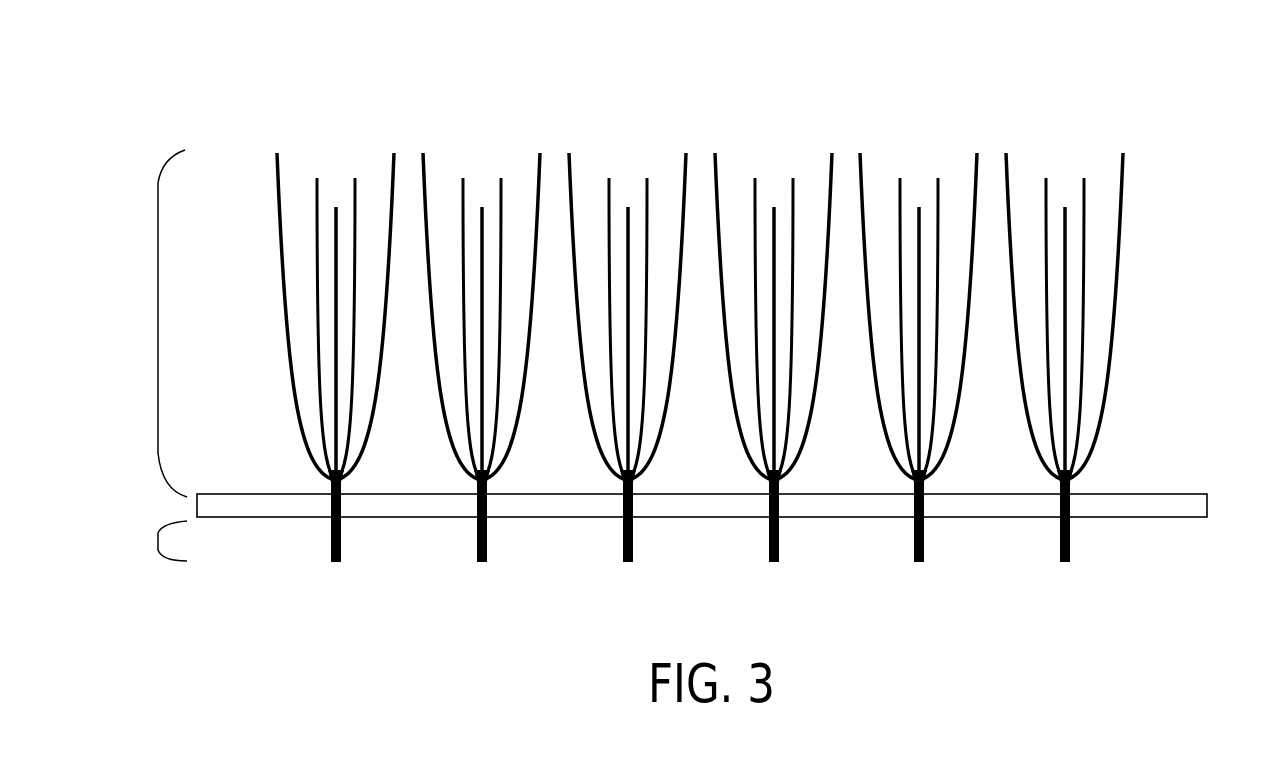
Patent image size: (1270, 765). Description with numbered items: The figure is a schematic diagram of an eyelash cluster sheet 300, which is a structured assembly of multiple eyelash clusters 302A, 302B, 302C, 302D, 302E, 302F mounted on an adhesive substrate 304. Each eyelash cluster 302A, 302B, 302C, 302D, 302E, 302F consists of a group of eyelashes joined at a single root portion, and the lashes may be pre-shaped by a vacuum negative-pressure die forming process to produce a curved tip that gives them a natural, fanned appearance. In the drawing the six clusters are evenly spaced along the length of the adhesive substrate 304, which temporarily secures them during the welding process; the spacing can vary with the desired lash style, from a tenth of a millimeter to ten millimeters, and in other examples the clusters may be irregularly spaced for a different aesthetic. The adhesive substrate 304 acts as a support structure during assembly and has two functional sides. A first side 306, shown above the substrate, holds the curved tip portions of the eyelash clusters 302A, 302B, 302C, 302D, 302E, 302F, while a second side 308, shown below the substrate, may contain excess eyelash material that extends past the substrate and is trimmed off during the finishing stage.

The eyelash cluster sheet 300 is at (898, 84).
The eyelash cluster 302A is at (279, 167).
The eyelash cluster 302B is at (425, 167).
The eyelash cluster 302C is at (571, 167).
The eyelash cluster 302D is at (717, 167).
The eyelash cluster 302E is at (862, 167).
The eyelash cluster 302F is at (1008, 167).
The adhesive substrate 304 is at (1175, 494).
The first side 306 is at (158, 323).
The second side 308 is at (157, 542).